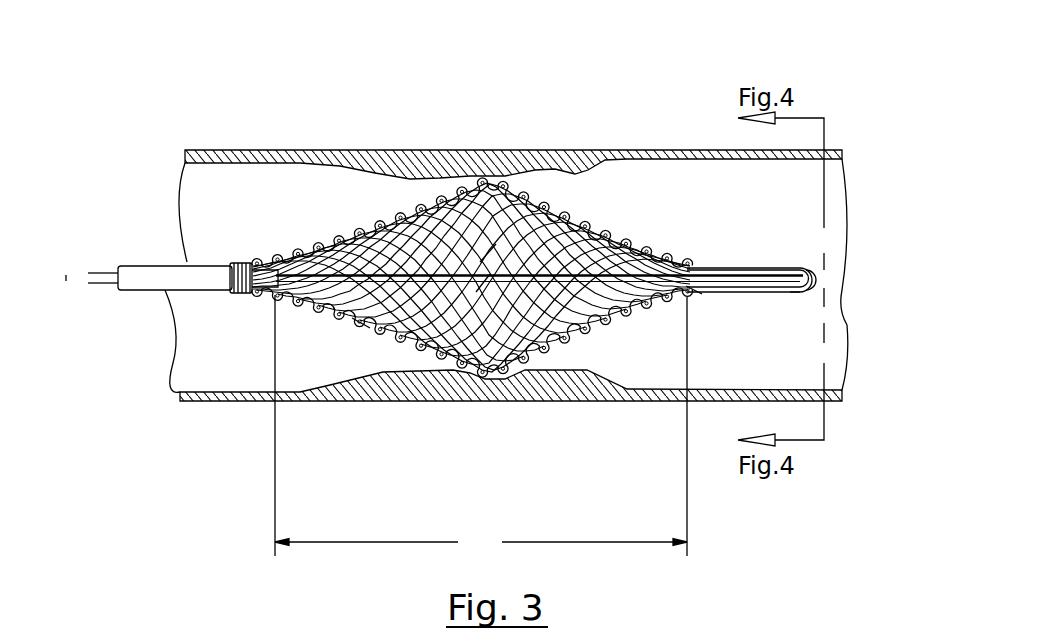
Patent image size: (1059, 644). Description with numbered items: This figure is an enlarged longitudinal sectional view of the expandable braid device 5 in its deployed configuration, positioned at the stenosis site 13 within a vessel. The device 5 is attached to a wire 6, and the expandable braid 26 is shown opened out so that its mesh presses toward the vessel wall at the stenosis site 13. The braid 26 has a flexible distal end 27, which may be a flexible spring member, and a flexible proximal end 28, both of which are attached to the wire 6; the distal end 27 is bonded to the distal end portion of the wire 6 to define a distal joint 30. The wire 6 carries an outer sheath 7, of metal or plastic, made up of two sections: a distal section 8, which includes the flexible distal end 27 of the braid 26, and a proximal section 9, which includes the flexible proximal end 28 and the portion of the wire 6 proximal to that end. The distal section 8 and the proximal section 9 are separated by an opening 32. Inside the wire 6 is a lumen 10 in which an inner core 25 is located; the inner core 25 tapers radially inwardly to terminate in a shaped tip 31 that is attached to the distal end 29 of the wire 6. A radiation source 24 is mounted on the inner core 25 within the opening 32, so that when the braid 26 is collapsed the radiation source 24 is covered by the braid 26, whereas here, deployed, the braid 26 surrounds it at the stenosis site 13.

The expandable braid device 5 is at (345, 195).
The wire 6 is at (148, 278).
The outer sheath 7 is at (197, 273).
The distal section 8 is at (780, 314).
The proximal section 9 is at (142, 312).
The lumen 10 is at (683, 270).
The stenosis site 13 is at (472, 172).
The radiation source 24 is at (483, 282).
The inner core 25 is at (361, 323).
The expandable braid 26 is at (488, 253).
The flexible distal end 27 is at (715, 258).
The flexible proximal end 28 is at (242, 268).
The distal end 29 is at (807, 267).
The distal joint 30 is at (695, 292).
The shaped tip 31 is at (806, 289).
The opening 32 is at (481, 425).